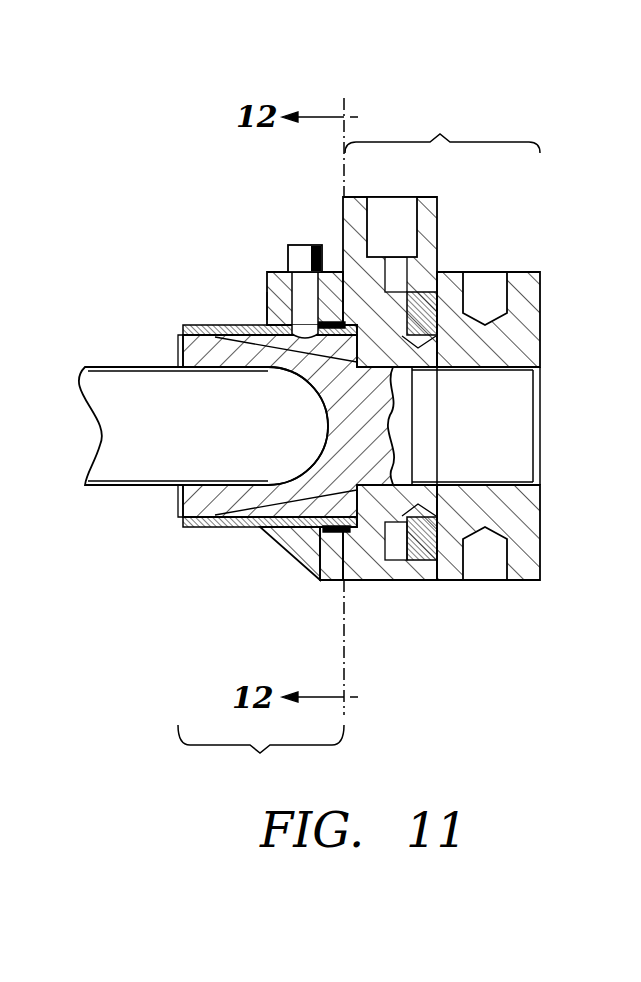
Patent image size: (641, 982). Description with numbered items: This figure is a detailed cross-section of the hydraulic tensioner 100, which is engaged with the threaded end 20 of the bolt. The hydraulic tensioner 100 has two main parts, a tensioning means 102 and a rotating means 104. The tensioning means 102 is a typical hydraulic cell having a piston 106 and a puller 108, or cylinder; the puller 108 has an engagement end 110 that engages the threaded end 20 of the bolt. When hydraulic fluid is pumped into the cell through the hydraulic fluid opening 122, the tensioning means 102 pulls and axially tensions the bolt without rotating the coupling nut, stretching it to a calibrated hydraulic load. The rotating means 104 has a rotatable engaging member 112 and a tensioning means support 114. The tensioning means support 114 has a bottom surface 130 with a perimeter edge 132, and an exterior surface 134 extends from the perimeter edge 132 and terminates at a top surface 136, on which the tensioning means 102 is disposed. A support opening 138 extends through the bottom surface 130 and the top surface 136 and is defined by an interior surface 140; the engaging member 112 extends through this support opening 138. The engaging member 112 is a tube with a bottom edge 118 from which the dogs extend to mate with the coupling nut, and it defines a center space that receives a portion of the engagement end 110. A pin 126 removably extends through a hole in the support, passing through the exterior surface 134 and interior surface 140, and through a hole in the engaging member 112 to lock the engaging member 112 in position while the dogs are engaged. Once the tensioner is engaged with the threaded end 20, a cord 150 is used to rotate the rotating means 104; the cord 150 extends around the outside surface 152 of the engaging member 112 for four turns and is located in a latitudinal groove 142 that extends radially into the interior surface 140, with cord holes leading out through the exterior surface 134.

The threaded end 20 is at (218, 437).
The hydraulic tensioner 100 is at (573, 120).
The tensioning means 102 is at (442, 127).
The rotating means 104 is at (261, 756).
The piston 106 is at (426, 292).
The puller 108 is at (540, 313).
The engagement end 110 is at (383, 448).
The engaging member 112 is at (199, 330).
The tensioning means support 114 is at (266, 313).
The bottom edge 118 is at (183, 332).
The hydraulic fluid opening 122 is at (388, 197).
The pin 126 is at (309, 245).
The bottom surface 130 is at (266, 292).
The perimeter edge 132 is at (271, 272).
The exterior surface 134 is at (338, 272).
The top surface 136 is at (333, 555).
The support opening 138 is at (265, 516).
The interior surface 140 is at (310, 535).
The latitudinal groove 142 is at (324, 556).
The cord 150 is at (327, 470).
The outside surface 152 is at (206, 326).